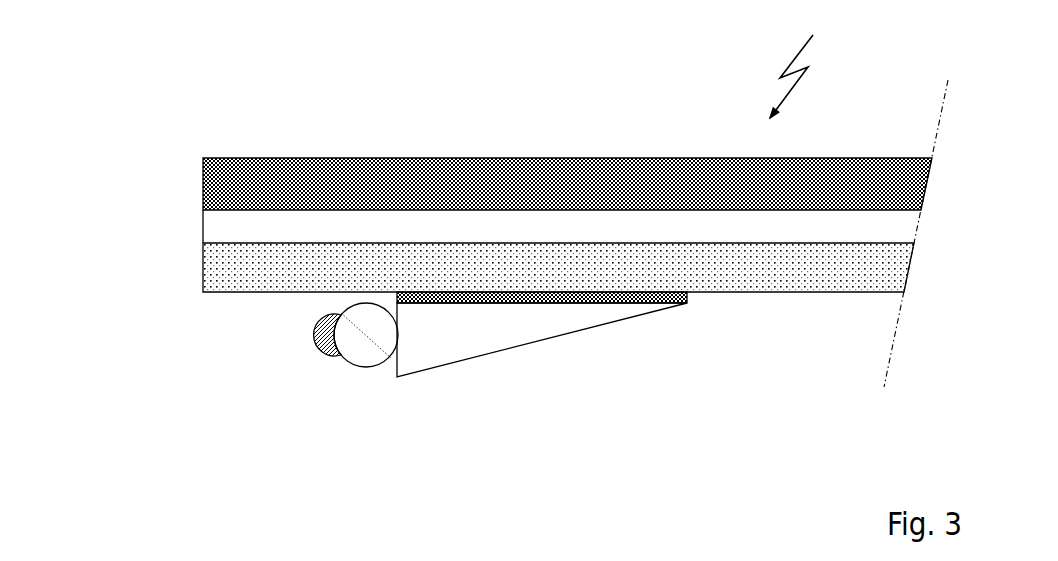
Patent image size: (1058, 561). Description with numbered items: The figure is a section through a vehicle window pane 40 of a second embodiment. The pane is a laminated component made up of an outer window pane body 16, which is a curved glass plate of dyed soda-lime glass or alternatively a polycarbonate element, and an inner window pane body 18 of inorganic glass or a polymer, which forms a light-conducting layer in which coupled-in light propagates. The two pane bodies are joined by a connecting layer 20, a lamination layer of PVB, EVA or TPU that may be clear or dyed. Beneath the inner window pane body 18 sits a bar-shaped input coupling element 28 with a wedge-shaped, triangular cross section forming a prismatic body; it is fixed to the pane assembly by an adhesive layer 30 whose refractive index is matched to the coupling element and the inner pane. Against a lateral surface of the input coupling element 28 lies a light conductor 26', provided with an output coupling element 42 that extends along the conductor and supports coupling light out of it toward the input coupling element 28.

The outer window pane body 16 is at (323, 180).
The connecting layer 20 is at (217, 222).
The inner window pane body 18 is at (250, 267).
The adhesive layer 30 is at (632, 303).
The input coupling element 28 is at (482, 343).
The light conductor 26' is at (378, 383).
The output coupling element 42 is at (312, 338).
The vehicle window pane 40 is at (809, 62).